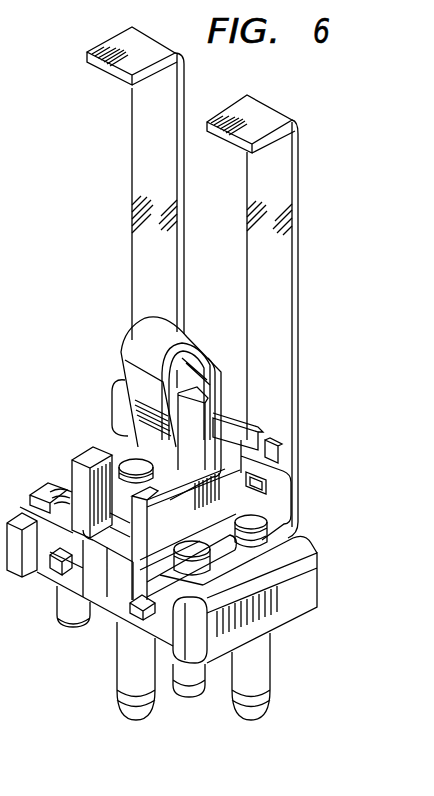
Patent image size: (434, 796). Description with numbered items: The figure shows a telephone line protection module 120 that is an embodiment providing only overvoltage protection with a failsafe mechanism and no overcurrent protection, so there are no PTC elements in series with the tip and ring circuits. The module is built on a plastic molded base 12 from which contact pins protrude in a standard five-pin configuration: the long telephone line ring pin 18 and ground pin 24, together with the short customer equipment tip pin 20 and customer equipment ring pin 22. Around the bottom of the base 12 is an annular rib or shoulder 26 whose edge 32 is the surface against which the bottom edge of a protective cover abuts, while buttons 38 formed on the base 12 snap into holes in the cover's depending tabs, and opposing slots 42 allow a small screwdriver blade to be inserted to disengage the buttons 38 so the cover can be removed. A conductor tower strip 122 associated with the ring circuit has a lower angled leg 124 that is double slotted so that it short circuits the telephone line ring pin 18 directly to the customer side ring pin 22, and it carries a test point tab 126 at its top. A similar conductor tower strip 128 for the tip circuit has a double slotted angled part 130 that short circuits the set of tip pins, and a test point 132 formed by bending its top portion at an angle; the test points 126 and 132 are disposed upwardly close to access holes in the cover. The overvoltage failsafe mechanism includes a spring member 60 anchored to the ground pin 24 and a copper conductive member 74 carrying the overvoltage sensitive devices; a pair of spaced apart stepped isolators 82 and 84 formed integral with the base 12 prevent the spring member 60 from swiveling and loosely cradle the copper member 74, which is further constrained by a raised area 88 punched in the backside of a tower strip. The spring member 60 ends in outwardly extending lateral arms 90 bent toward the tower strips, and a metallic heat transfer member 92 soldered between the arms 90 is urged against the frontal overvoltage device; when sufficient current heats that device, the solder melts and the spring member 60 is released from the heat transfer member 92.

The plastic molded base 12 is at (332, 612).
The telephone line ring pin 18 is at (270, 667).
The customer equipment tip pin 20 is at (58, 603).
The customer equipment ring pin 22 is at (192, 702).
The ground pin 24 is at (118, 670).
The annular rib or shoulder 26 is at (312, 587).
The edge of annular shoulder 32 is at (297, 550).
The button 38 is at (50, 565).
The slot 42 is at (112, 598).
The spring member 60 is at (132, 352).
The copper conductive member 74 is at (280, 483).
The stepped isolator 82 is at (93, 457).
The stepped isolator 84 is at (175, 535).
The raised area 88 is at (272, 443).
The lateral arm 90 is at (253, 433).
The heat transfer member 92 is at (200, 393).
The telephone line protection module 120 is at (318, 208).
The conductor tower strip 122 is at (283, 300).
The angled bottom leg 124 is at (278, 548).
The test point tab 126 is at (262, 120).
The conductor tower strip 128 is at (140, 265).
The double slotted angled part 130 is at (38, 493).
The test point 132 is at (146, 52).